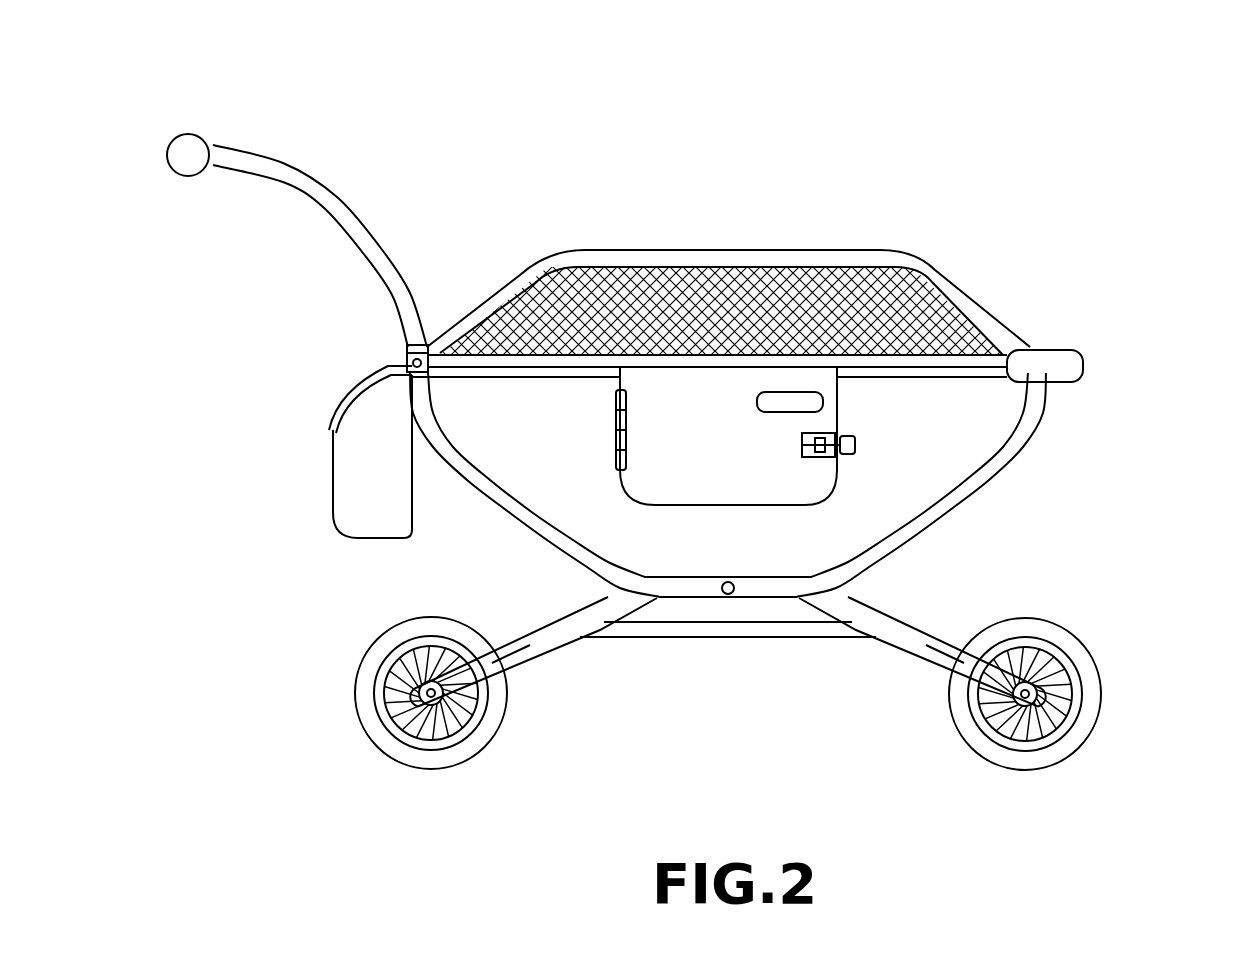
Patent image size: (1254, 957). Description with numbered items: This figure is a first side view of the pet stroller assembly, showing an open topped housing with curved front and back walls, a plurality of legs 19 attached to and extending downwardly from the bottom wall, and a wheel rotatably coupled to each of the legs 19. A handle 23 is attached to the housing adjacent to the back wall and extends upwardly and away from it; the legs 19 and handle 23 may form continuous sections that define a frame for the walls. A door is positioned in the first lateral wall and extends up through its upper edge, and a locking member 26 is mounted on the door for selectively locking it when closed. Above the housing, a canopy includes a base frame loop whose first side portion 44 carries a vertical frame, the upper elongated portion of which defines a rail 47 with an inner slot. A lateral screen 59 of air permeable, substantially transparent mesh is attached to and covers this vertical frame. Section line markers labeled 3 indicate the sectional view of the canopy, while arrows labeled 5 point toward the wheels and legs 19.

The handle 23 is at (274, 158).
The first side portion 44 is at (573, 362).
The lateral screens 59 is at (663, 303).
The rails 47 is at (751, 250).
The section line 3- 3 is at (1125, 250).
The locking member 26 is at (855, 452).
The legs 19 is at (570, 640).
The wheels 5 is at (372, 718).